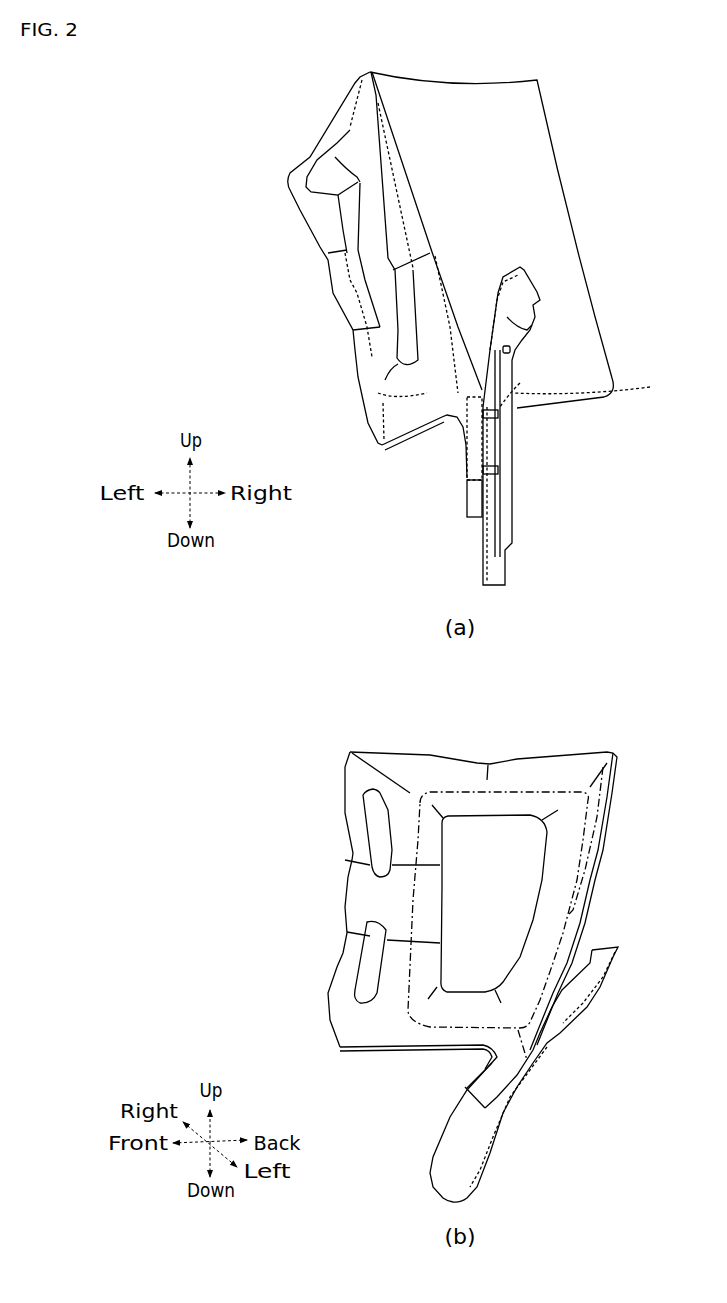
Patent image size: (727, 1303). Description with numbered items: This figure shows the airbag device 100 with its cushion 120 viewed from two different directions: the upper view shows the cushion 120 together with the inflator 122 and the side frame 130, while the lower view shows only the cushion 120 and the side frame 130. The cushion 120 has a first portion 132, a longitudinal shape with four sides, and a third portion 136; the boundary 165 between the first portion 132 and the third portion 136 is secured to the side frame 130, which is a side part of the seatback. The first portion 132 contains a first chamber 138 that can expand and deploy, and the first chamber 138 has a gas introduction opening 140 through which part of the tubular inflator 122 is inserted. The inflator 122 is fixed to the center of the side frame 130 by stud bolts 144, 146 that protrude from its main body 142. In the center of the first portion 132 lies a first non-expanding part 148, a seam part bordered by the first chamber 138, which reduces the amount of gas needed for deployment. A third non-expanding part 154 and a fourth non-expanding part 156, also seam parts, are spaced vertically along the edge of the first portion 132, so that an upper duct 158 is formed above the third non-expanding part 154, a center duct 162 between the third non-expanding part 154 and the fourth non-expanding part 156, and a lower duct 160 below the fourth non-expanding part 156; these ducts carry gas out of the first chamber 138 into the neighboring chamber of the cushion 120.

The buckle device 100 is at (625, 104).
The cushion 120 is at (561, 166).
The inflator 122 is at (474, 526).
The side frame 130 is at (505, 503).
The first portion 132 is at (294, 212).
The third portion 136 is at (546, 211).
The first chamber 138 is at (409, 442).
The gas introduction opening 140 is at (463, 480).
The main body 142 is at (471, 503).
The stud bolt 144 is at (500, 415).
The stud bolt 146 is at (500, 470).
The first non-expanding part 148 is at (383, 268).
The third non-expanding part 154 is at (377, 823).
The fourth non-expanding part 156 is at (365, 955).
The upper duct 158 is at (365, 778).
The lower duct 160 is at (350, 1020).
The center duct 162 is at (360, 894).
The boundary 165 is at (600, 385).